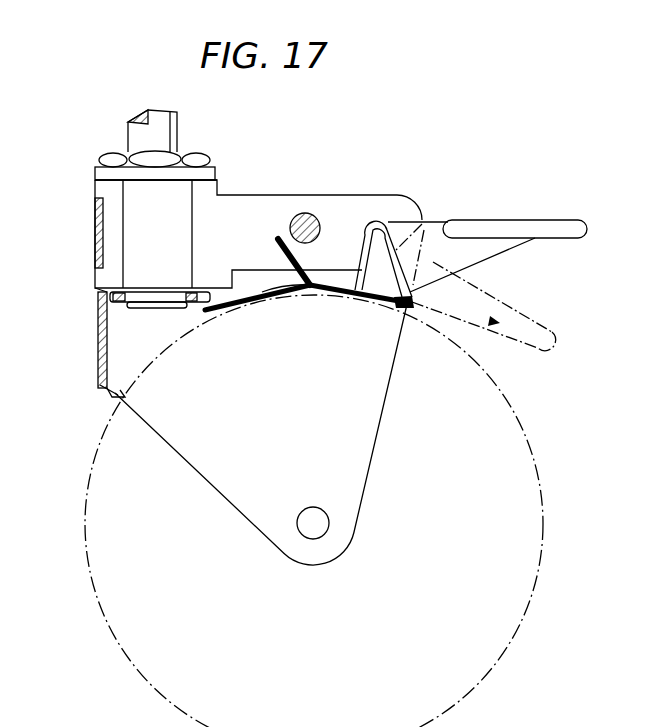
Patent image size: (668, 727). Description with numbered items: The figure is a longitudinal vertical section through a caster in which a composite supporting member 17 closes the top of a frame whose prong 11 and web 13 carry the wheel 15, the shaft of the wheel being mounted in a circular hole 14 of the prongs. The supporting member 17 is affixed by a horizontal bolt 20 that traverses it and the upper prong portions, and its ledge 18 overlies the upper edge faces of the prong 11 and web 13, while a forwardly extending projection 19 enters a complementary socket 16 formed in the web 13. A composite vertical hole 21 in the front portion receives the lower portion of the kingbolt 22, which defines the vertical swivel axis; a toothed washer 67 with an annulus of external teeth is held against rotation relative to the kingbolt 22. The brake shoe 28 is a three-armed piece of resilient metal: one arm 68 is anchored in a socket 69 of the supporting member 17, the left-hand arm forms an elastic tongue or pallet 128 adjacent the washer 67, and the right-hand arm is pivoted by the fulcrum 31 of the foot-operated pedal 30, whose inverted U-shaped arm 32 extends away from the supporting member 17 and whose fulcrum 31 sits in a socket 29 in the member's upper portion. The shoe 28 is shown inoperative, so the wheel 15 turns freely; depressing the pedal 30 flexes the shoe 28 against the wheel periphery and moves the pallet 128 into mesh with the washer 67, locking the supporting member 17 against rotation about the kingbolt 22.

The prong 11 is at (323, 378).
The web 13 is at (98, 365).
The circular hole 14 is at (330, 511).
The wheel 15 is at (539, 480).
The socket 16 is at (125, 300).
The supporting member 17 is at (247, 195).
The ledge 18 is at (95, 183).
The projection 19 is at (107, 283).
The bolt 20 is at (313, 212).
The hole 21 is at (122, 235).
The kingbolt 22 is at (166, 235).
The brake shoe 28 is at (384, 306).
The socket 29 is at (358, 247).
The pedal 30 is at (524, 222).
The fulcrum 31 is at (422, 222).
The arm 32 is at (477, 249).
The toothed washer 67 is at (97, 322).
The anchoring arm 68 is at (277, 236).
The socket 69 is at (278, 247).
The elastic tongue 128 is at (238, 300).